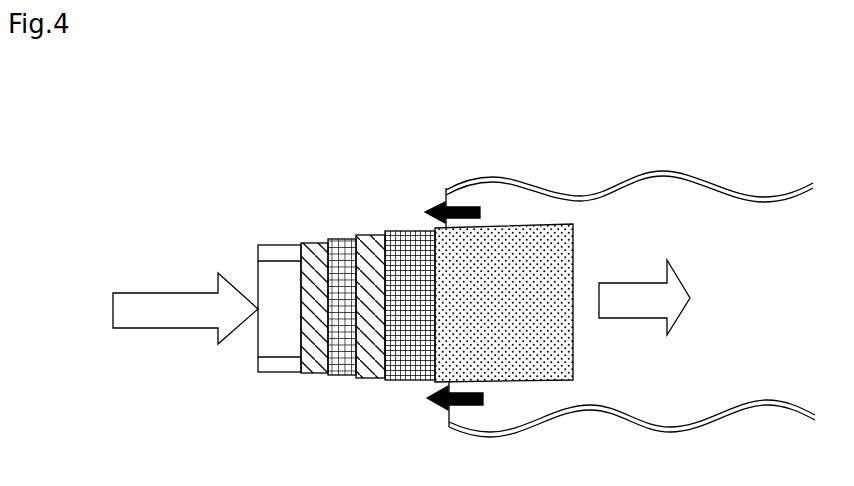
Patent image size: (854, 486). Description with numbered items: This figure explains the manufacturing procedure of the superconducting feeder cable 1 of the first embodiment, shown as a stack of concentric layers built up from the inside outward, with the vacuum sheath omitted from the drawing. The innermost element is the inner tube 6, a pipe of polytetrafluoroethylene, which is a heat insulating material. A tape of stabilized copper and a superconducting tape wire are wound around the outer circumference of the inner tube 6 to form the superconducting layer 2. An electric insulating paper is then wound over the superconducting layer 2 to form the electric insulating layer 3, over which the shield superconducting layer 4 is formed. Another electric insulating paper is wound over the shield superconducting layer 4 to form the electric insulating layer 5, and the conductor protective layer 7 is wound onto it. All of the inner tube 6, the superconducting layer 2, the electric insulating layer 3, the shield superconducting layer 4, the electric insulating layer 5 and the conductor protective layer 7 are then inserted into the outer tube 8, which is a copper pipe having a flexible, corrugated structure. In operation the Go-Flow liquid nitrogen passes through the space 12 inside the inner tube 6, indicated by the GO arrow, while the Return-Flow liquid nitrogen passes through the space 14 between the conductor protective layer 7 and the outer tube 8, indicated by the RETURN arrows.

The superconducting feeder cable 1 is at (464, 256).
The superconducting layer 2 is at (318, 371).
The electric insulating layer 3 is at (346, 373).
The shield superconducting layer 4 is at (361, 236).
The electric insulating layer 5 is at (415, 376).
The inner tube 6 is at (272, 249).
The conductor protective layer 7 is at (565, 269).
The outer tube 8 is at (600, 196).
The space 12 is at (271, 341).
The space 14 is at (497, 197).